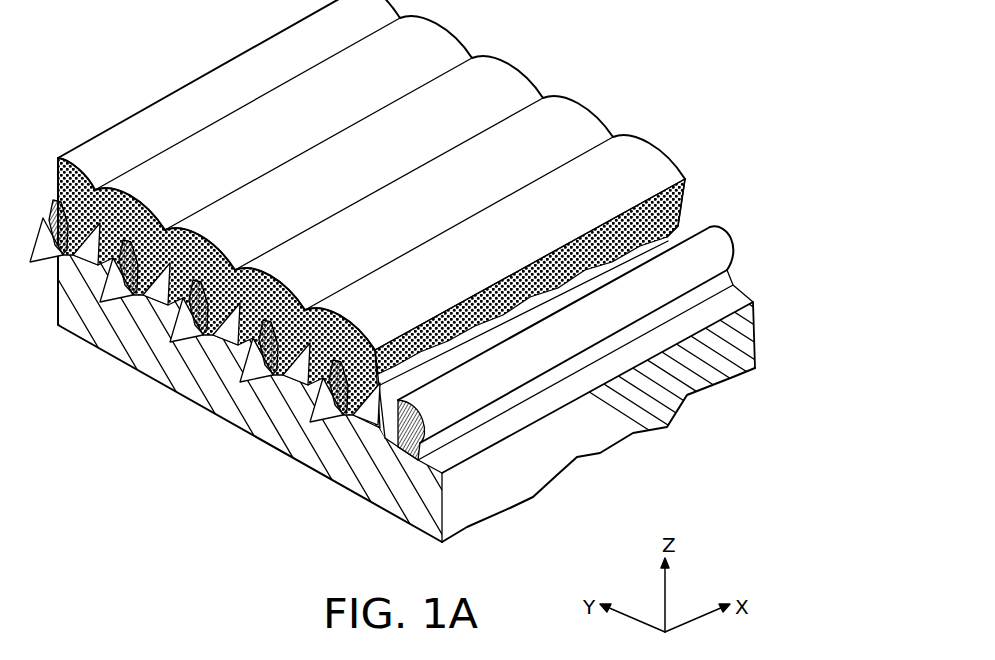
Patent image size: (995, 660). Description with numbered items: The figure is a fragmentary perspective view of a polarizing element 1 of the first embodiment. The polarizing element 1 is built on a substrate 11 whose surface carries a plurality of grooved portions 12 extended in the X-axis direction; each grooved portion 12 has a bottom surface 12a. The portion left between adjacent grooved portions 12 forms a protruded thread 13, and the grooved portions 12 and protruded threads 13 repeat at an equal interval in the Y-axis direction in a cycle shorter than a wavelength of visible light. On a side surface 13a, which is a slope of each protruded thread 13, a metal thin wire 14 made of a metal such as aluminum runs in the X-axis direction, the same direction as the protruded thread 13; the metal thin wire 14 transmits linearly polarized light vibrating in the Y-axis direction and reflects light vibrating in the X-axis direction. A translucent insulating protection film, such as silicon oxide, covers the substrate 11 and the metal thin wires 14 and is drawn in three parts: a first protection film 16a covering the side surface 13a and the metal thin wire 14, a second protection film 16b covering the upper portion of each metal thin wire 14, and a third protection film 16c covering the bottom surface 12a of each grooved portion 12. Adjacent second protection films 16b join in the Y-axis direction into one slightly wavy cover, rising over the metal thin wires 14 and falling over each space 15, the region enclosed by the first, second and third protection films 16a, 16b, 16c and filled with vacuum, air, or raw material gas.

The polarizing element 1 is at (612, 78).
The substrate 11 is at (677, 388).
The grooved portion 12 is at (438, 448).
The bottom surface of grooved portion 12a is at (474, 447).
The protruded thread 13 is at (103, 350).
The side surface of protruded thread 13a is at (120, 292).
The metal thin wire 14 is at (542, 350).
The space 15 is at (287, 378).
The first protection film 16a is at (171, 306).
The second protection film 16b is at (93, 190).
The third protection film 16c is at (208, 332).